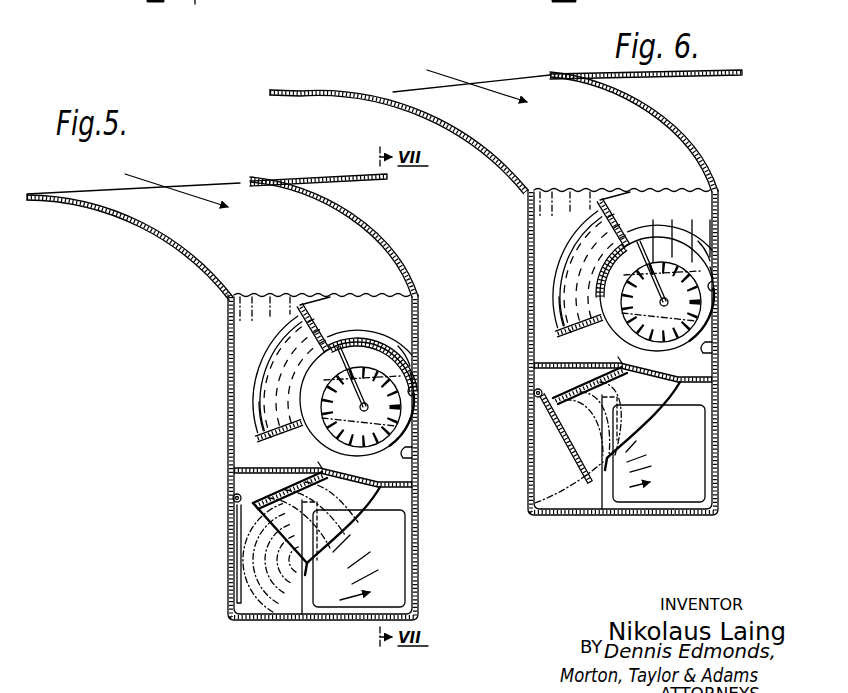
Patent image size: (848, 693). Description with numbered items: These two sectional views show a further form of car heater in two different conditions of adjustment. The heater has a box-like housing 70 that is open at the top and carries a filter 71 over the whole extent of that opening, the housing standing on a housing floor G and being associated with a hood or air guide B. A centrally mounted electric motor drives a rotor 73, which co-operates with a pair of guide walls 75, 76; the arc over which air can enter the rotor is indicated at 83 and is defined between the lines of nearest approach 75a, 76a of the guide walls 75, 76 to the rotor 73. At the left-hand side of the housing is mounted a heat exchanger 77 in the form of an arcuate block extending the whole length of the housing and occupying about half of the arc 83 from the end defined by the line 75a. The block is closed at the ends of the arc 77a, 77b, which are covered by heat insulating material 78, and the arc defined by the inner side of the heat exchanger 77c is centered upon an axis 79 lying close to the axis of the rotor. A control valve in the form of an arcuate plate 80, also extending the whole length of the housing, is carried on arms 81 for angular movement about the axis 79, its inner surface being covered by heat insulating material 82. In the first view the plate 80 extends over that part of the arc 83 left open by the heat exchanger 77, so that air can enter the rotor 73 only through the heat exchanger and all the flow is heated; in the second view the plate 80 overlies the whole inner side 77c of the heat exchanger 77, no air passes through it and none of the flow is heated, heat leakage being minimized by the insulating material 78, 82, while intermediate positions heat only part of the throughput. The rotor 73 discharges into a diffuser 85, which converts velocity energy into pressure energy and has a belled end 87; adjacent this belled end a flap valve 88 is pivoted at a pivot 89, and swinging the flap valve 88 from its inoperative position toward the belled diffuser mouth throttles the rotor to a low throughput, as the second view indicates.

In FIG. 5, the box-like housing 70 is at (250, 618).
In FIG. 6, the box-like housing 70 is at (566, 513).
In FIG. 5, the filter 71 is at (300, 298).
In FIG. 6, the filter 71 is at (636, 192).
In FIG. 5, the rotor 73 is at (396, 432).
In FIG. 6, the rotor 73 is at (702, 335).
In FIG. 5, the guide wall 75 is at (310, 477).
In FIG. 6, the guide wall 75 is at (606, 370).
In FIG. 5, the line of nearest approach 75a is at (312, 455).
In FIG. 6, the line of nearest approach 75a is at (606, 352).
In FIG. 5, the guide wall 76 is at (412, 453).
In FIG. 6, the guide wall 76 is at (710, 352).
In FIG. 5, the line of nearest approach 76a is at (416, 391).
In FIG. 6, the line of nearest approach 76a is at (715, 307).
In FIG. 5, the heat exchanger 77 is at (262, 378).
In FIG. 6, the heat exchanger 77 is at (562, 285).
In FIG. 5, the end of the arc 77a is at (270, 436).
In FIG. 6, the end of the arc 77a is at (570, 332).
In FIG. 5, the end of the arc 77b is at (297, 314).
In FIG. 6, the end of the arc 77b is at (616, 217).
In FIG. 5, the inner side of the heat exchanger 77c is at (320, 362).
In FIG. 6, the inner side of the heat exchanger 77c is at (636, 268).
In FIG. 5, the heat insulating material 78 is at (295, 325).
In FIG. 6, the heat insulating material 78 is at (625, 218).
In FIG. 5, the axis 79 is at (422, 362).
In FIG. 6, the axis 79 is at (722, 290).
In FIG. 5, the arcuate plate 80 is at (340, 342).
In FIG. 6, the arcuate plate 80 is at (648, 225).
In FIG. 5, the arms 81 is at (352, 338).
In FIG. 6, the arms 81 is at (607, 256).
In FIG. 5, the heat insulating material 82 is at (392, 346).
In FIG. 6, the heat insulating material 82 is at (690, 238).
In FIG. 5, the arc 83 is at (410, 345).
In FIG. 6, the arc 83 is at (717, 270).
In FIG. 5, the diffuser 85 is at (332, 517).
In FIG. 6, the diffuser 85 is at (627, 412).
In FIG. 5, the belled end of the diffuser 87 is at (298, 543).
In FIG. 6, the belled end of the diffuser 87 is at (600, 437).
In FIG. 5, the flap valve 88 is at (238, 568).
In FIG. 6, the flap valve 88 is at (565, 445).
In FIG. 5, the pivot 89 is at (232, 497).
In FIG. 6, the pivot 89 is at (533, 392).
In FIG. 5, the hood / air guide B is at (57, 198).
In FIG. 6, the hood / air guide B is at (311, 90).
In FIG. 5, the housing floor G is at (390, 479).
In FIG. 6, the housing floor G is at (715, 372).